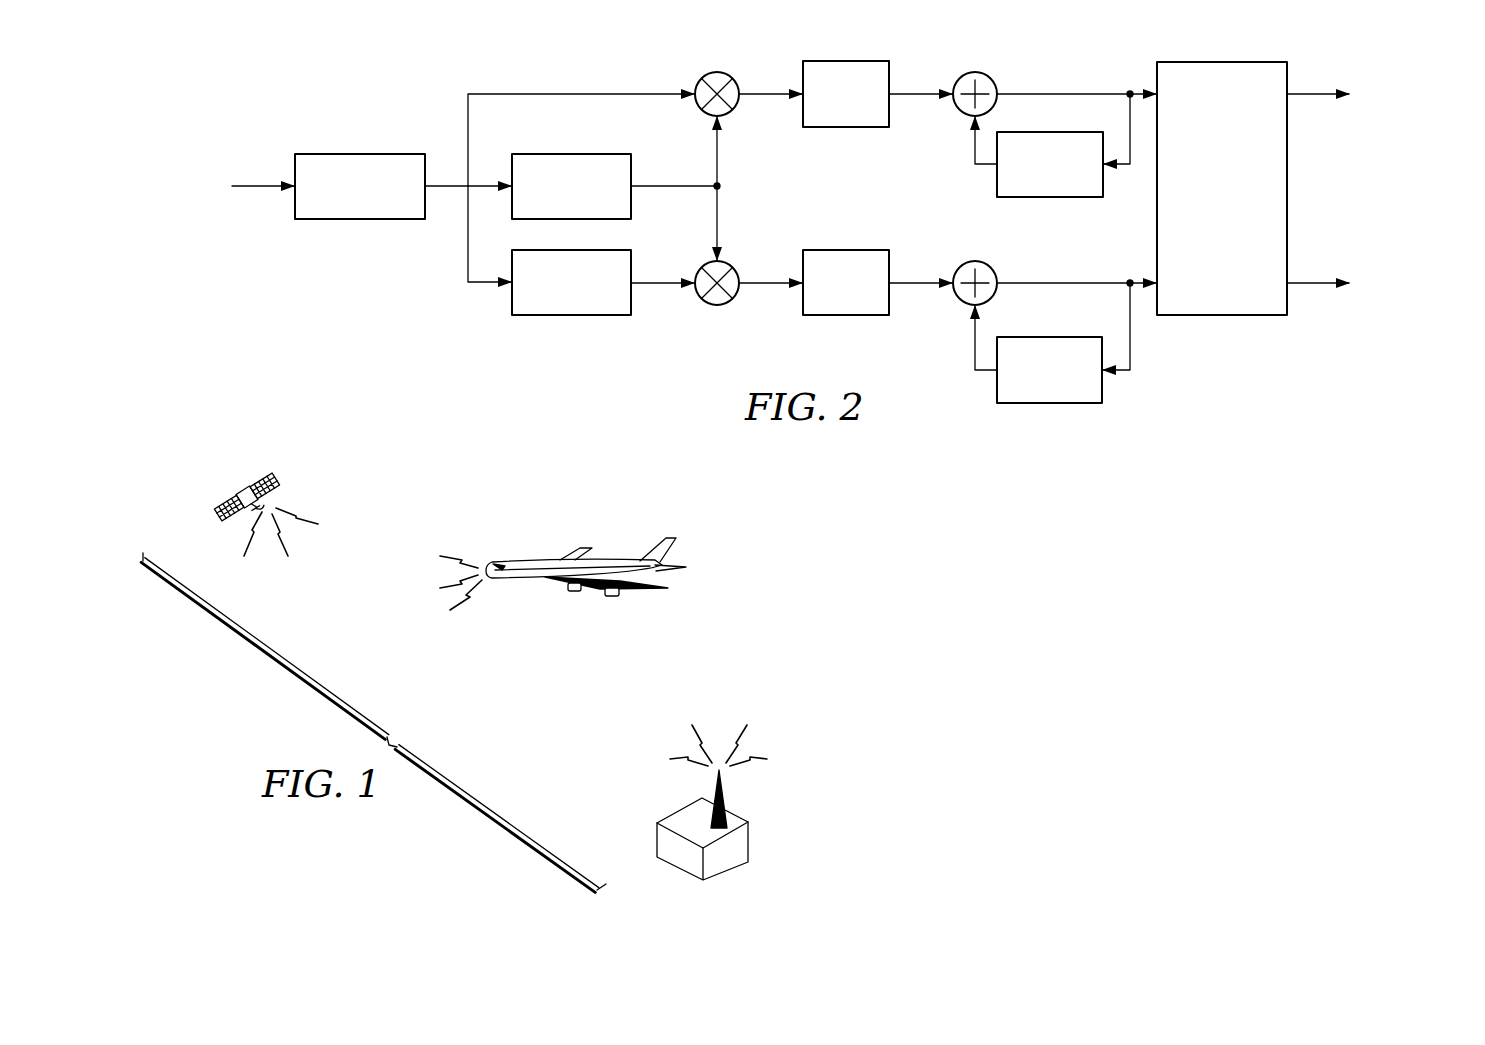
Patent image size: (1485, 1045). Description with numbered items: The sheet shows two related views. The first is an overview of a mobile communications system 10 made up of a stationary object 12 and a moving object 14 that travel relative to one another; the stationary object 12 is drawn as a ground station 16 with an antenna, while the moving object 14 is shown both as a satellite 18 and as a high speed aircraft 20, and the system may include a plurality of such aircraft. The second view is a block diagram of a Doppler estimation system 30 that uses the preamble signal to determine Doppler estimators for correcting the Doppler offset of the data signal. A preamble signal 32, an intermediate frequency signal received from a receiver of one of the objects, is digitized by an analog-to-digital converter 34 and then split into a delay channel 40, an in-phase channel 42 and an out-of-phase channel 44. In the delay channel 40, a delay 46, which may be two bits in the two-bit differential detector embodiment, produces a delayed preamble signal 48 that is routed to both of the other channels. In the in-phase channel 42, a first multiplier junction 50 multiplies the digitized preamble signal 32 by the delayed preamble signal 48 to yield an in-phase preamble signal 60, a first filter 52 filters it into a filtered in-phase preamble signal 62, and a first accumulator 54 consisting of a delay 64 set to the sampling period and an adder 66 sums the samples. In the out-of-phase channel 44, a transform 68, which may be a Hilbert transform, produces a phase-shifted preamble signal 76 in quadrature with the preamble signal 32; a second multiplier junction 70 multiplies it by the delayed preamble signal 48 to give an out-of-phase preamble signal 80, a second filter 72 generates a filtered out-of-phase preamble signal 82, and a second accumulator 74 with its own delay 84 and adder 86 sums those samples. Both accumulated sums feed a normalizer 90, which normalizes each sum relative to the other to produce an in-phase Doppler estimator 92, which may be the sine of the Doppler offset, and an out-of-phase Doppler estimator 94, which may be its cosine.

In FIG. 1, the mobile communications system 10 is at (781, 616).
In FIG. 1, the stationary object 12 is at (735, 795).
In FIG. 1, the moving object 14 is at (216, 468).
In FIG. 1, the ground station 16 is at (742, 843).
In FIG. 1, the satellite 18 is at (243, 487).
In FIG. 1, the high speed aircraft 20 is at (612, 562).
In FIG. 2, the Doppler estimation system 30 is at (405, 60).
In FIG. 2, the preamble signal 32 is at (268, 184).
In FIG. 2, the analog-to-digital converter 34 is at (362, 153).
In FIG. 2, the delay channel 40 is at (476, 184).
In FIG. 2, the in-phase channel 42 is at (528, 93).
In FIG. 2, the out-of-phase channel 44 is at (465, 252).
In FIG. 2, the delay 46 is at (572, 153).
In FIG. 2, the delayed preamble signal 48 is at (685, 184).
In FIG. 2, the first multiplier junction 50 is at (717, 71).
In FIG. 2, the first filter 52 is at (848, 60).
In FIG. 2, the first accumulator 54 is at (1084, 80).
In FIG. 2, the in-phase preamble signal 60 is at (762, 93).
In FIG. 2, the filtered in-phase preamble signal 62 is at (910, 93).
In FIG. 2, the delay 64 is at (1040, 198).
In FIG. 2, the adder 66 is at (975, 71).
In FIG. 2, the transform 68 is at (570, 316).
In FIG. 2, the second multiplier junction 70 is at (717, 306).
In FIG. 2, the second filter 72 is at (848, 316).
In FIG. 2, the second accumulator 74 is at (1100, 268).
In FIG. 2, the phase-shifted preamble signal 76 is at (665, 285).
In FIG. 2, the out-of-phase preamble signal 80 is at (760, 285).
In FIG. 2, the filtered out-of-phase preamble signal 82 is at (910, 285).
In FIG. 2, the delay 84 is at (1057, 404).
In FIG. 2, the adder 86 is at (963, 263).
In FIG. 2, the normalizer 90 is at (1222, 61).
In FIG. 2, the in-phase Doppler estimator 92 is at (1313, 93).
In FIG. 2, the out-of-phase Doppler estimator 94 is at (1313, 284).